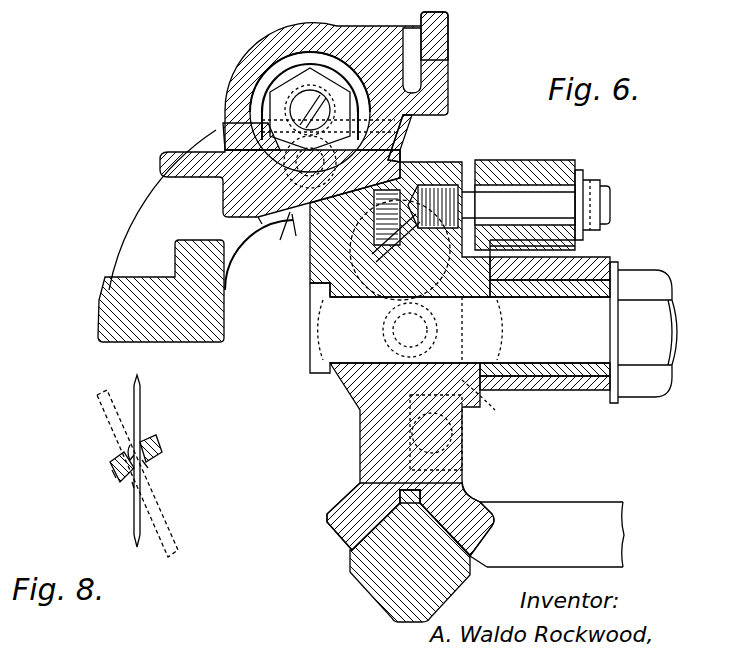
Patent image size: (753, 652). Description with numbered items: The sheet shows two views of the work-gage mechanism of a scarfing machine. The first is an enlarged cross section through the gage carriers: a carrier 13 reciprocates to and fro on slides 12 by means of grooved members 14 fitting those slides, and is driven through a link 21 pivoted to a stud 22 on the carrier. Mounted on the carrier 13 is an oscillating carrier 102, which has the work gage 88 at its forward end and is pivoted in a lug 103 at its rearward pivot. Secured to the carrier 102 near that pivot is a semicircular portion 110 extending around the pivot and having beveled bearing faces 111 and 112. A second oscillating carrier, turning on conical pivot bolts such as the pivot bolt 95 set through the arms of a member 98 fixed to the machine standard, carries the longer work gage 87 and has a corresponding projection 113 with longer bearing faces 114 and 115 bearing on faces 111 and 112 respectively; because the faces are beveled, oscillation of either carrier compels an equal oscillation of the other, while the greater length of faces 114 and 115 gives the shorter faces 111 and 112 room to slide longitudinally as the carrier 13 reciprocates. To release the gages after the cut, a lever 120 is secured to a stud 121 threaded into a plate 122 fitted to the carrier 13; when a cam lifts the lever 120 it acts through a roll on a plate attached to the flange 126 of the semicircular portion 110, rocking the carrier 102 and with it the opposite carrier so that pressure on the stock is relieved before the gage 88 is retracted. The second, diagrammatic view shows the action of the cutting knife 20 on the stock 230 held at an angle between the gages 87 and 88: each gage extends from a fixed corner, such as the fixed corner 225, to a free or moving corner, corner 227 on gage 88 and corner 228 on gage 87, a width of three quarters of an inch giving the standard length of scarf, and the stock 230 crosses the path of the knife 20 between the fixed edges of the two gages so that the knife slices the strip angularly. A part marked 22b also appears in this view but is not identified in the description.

In FIG. 6, the oscillating carrier 102 is at (410, 70).
In FIG. 6, the flange 126 is at (437, 32).
In FIG. 6, the semicircular portion 110 is at (265, 68).
In FIG. 6, the bearing face 111 is at (255, 105).
In FIG. 6, the projection 113 is at (240, 190).
In FIG. 6, the bearing face 114 is at (262, 122).
In FIG. 6, the bearing face 112 is at (395, 145).
In FIG. 6, the rearward pivot lug 103 is at (312, 100).
In FIG. 6, the member 98 is at (140, 236).
In FIG. 6, the pivot bolt 95 is at (282, 241).
In FIG. 6, the bearing face 115 is at (430, 165).
In FIG. 6, the lever 120 is at (548, 168).
In FIG. 6, the stud 121 is at (566, 212).
In FIG. 6, the plate 122 is at (455, 240).
In FIG. 6, the link 21 is at (595, 262).
In FIG. 6, the stud 22 is at (497, 333).
In FIG. 6, the carrier 13 is at (365, 432).
In FIG. 6, the grooved member 14 is at (355, 502).
In FIG. 6, the slide 12 is at (375, 582).
In FIG. 8, the cutting knife 20 is at (140, 385).
In FIG. 8, the stock 230 is at (100, 410).
In FIG. 8, the free or moving corner 227 is at (115, 458).
In FIG. 8, the work gage 88 is at (158, 446).
In FIG. 8, the shaft portion 22b is at (130, 448).
In FIG. 8, the work gage 87 is at (112, 472).
In FIG. 8, the free or moving corner 228 is at (148, 466).
In FIG. 8, the fixed corner 225 is at (132, 482).